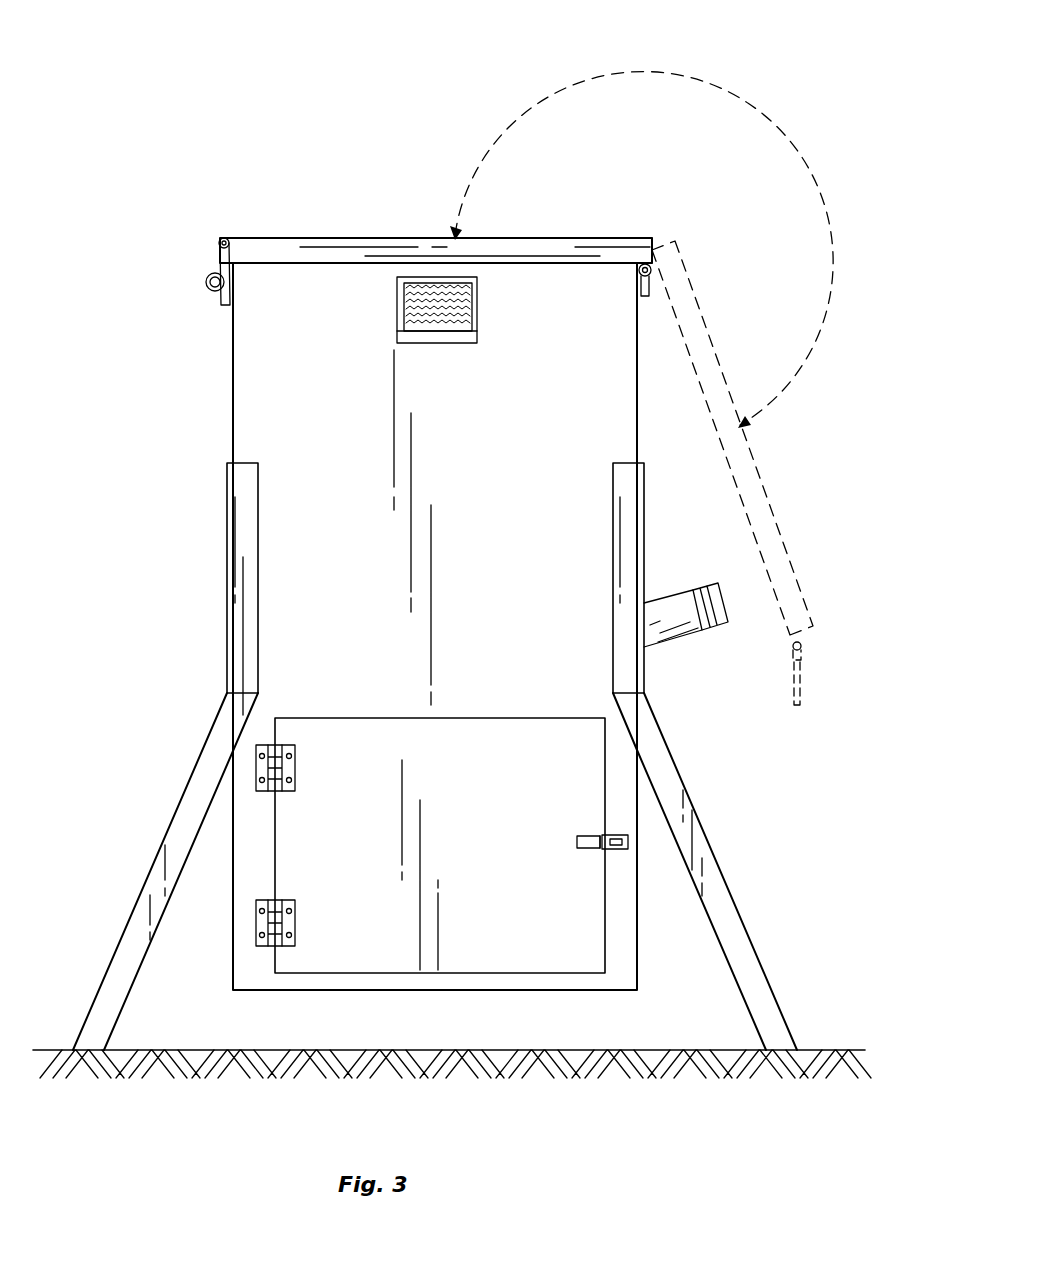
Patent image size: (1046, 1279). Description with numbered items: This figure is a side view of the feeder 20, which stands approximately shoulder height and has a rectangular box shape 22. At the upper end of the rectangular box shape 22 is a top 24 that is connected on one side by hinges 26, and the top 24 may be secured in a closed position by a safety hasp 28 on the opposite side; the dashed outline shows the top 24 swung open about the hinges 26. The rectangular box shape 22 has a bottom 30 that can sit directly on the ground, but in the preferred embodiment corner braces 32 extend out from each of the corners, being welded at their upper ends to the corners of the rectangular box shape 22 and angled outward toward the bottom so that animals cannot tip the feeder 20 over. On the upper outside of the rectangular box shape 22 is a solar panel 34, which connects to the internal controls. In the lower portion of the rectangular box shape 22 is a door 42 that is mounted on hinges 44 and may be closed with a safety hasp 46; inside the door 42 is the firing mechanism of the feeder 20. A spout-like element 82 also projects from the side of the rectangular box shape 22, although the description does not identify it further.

The feeder 20 is at (372, 170).
The rectangular box shape 22 is at (487, 519).
The top 24 is at (362, 237).
The hinges 26 is at (655, 282).
The safety hasp 28 is at (208, 279).
The bottom 30 is at (425, 992).
The corner braces 32 is at (185, 792).
The solar panel 34 is at (478, 305).
The door 42 is at (468, 852).
The hinges 44 is at (278, 795).
The safety hasp 46 is at (617, 852).
The feed spout 82 is at (658, 648).